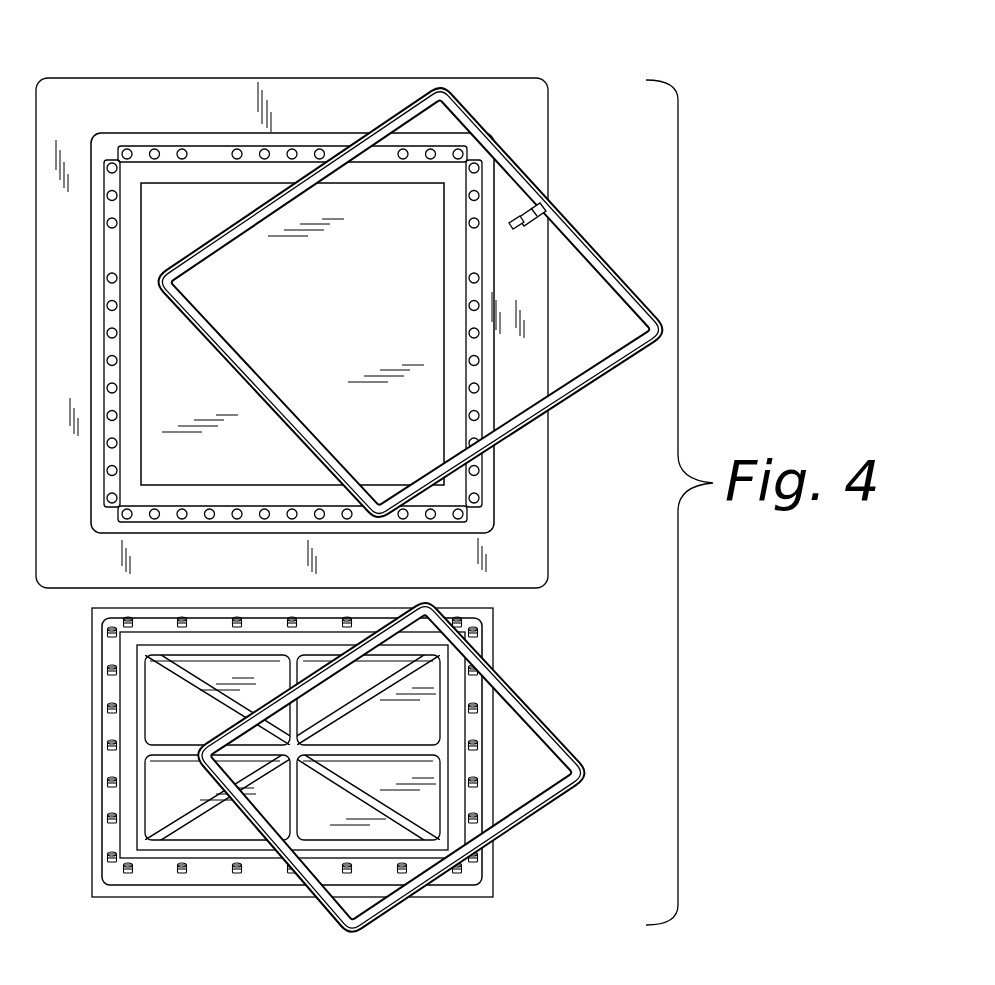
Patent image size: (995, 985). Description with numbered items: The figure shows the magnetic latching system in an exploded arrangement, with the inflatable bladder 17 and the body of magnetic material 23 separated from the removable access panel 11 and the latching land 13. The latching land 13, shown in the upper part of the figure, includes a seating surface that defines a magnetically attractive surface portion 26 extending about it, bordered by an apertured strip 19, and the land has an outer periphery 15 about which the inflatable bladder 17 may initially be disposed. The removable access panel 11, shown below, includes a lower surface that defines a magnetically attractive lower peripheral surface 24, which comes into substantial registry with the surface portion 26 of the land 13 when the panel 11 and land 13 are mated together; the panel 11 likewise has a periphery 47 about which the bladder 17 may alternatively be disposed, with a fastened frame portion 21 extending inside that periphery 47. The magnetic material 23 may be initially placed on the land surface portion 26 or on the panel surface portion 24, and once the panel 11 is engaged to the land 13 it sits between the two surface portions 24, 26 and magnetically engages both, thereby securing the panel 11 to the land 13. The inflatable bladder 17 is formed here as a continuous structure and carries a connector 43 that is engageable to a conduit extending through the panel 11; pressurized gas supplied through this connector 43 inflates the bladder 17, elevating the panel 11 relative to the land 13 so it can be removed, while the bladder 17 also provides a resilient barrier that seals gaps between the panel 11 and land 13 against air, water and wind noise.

The latching land 13 is at (236, 88).
The perforated gasket strip 19 is at (208, 152).
The periphery of land 15 is at (97, 293).
The magnetically attractive surface portion 26 is at (125, 323).
The inflatable bladder 17 is at (573, 232).
The connector 43 is at (522, 215).
The lower frame 21 is at (112, 685).
The magnetically attractive lower peripheral surface 24 is at (128, 728).
The removable access panel 11 is at (157, 803).
The periphery of panel 47 is at (93, 842).
The magnetic material 23 is at (510, 690).